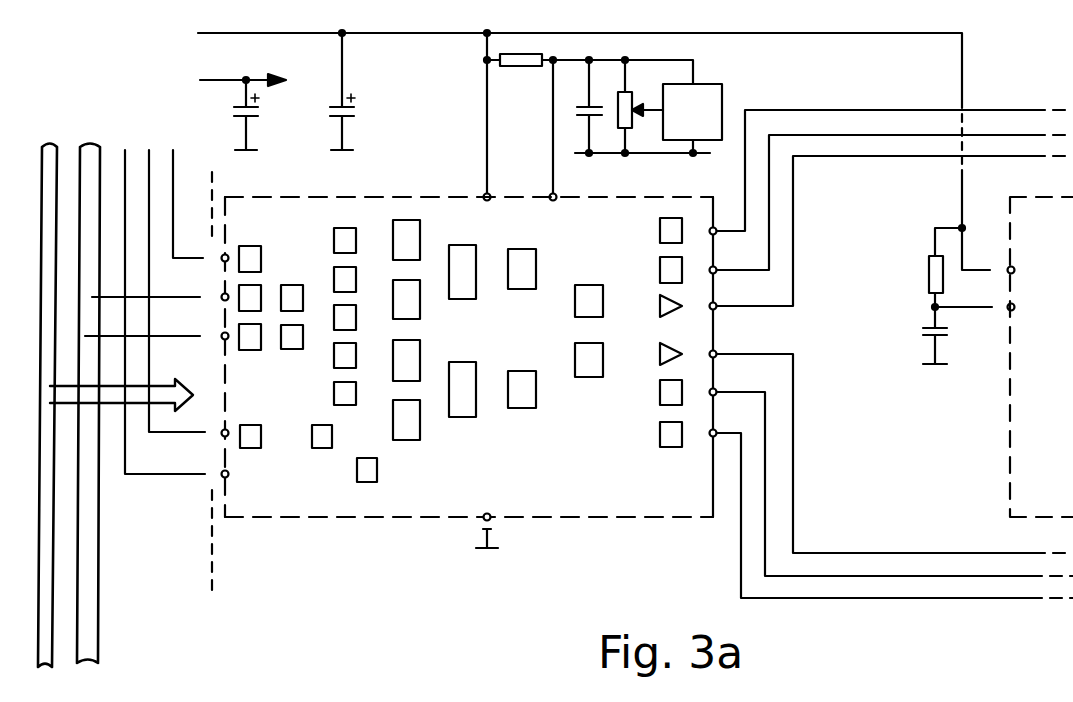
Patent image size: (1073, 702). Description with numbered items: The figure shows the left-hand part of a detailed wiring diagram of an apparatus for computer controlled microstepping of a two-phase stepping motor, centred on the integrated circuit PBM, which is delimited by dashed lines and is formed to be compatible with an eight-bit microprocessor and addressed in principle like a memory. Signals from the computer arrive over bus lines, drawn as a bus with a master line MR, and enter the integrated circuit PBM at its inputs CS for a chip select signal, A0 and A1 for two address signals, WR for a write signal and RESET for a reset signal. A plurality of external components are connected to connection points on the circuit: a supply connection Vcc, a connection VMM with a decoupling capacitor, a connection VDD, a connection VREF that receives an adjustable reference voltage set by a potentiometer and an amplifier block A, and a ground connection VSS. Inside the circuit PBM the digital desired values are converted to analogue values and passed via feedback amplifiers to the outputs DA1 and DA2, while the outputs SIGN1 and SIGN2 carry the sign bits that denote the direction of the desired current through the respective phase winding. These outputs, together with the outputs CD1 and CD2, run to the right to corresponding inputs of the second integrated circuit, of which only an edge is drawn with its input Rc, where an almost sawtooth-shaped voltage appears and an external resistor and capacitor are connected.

The integrated circuit PBM is at (462, 382).
The amplifier / reference voltage regulator A is at (692, 118).
The supply voltage rail Vcc is at (560, 125).
The memory supply voltage VMM is at (256, 91).
The logic supply terminal VDD is at (465, 117).
The reference voltage VREF is at (598, 127).
The ground terminal VSS is at (503, 532).
The master reset bus line MR is at (127, 150).
The write signal input WR is at (152, 124).
The chip select signal input CS is at (188, 125).
The address signal input A0 is at (160, 310).
The address signal input A1 is at (157, 348).
The reset signal input RESET is at (183, 488).
The sign output SIGN1 is at (878, 172).
The output CD1 is at (892, 205).
The analogue desired value output DA1 is at (892, 233).
The analogue desired value output DA2 is at (892, 441).
The output CD2 is at (892, 474).
The sign output SIGN2 is at (892, 505).
The input RC Rc is at (998, 357).